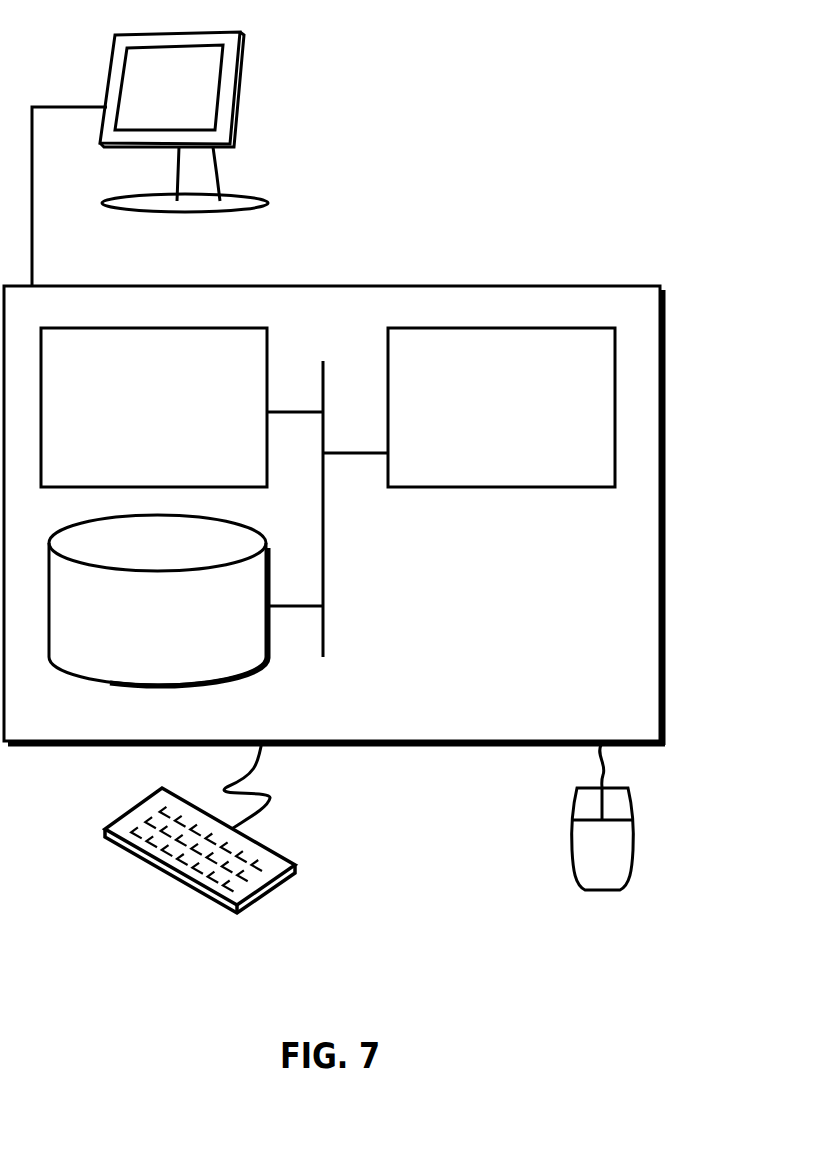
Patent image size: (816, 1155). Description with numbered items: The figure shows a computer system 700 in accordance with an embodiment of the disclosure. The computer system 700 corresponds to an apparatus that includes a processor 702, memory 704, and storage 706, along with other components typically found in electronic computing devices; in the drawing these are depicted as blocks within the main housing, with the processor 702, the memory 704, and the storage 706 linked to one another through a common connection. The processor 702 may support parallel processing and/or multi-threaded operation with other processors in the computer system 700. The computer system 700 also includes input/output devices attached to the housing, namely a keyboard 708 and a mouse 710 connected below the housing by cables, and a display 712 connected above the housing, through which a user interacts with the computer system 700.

The computer system 700 is at (378, 263).
The processor 702 is at (525, 420).
The memory 704 is at (175, 420).
The storage 706 is at (182, 632).
The keyboard 708 is at (122, 847).
The mouse 710 is at (623, 862).
The display 712 is at (150, 159).